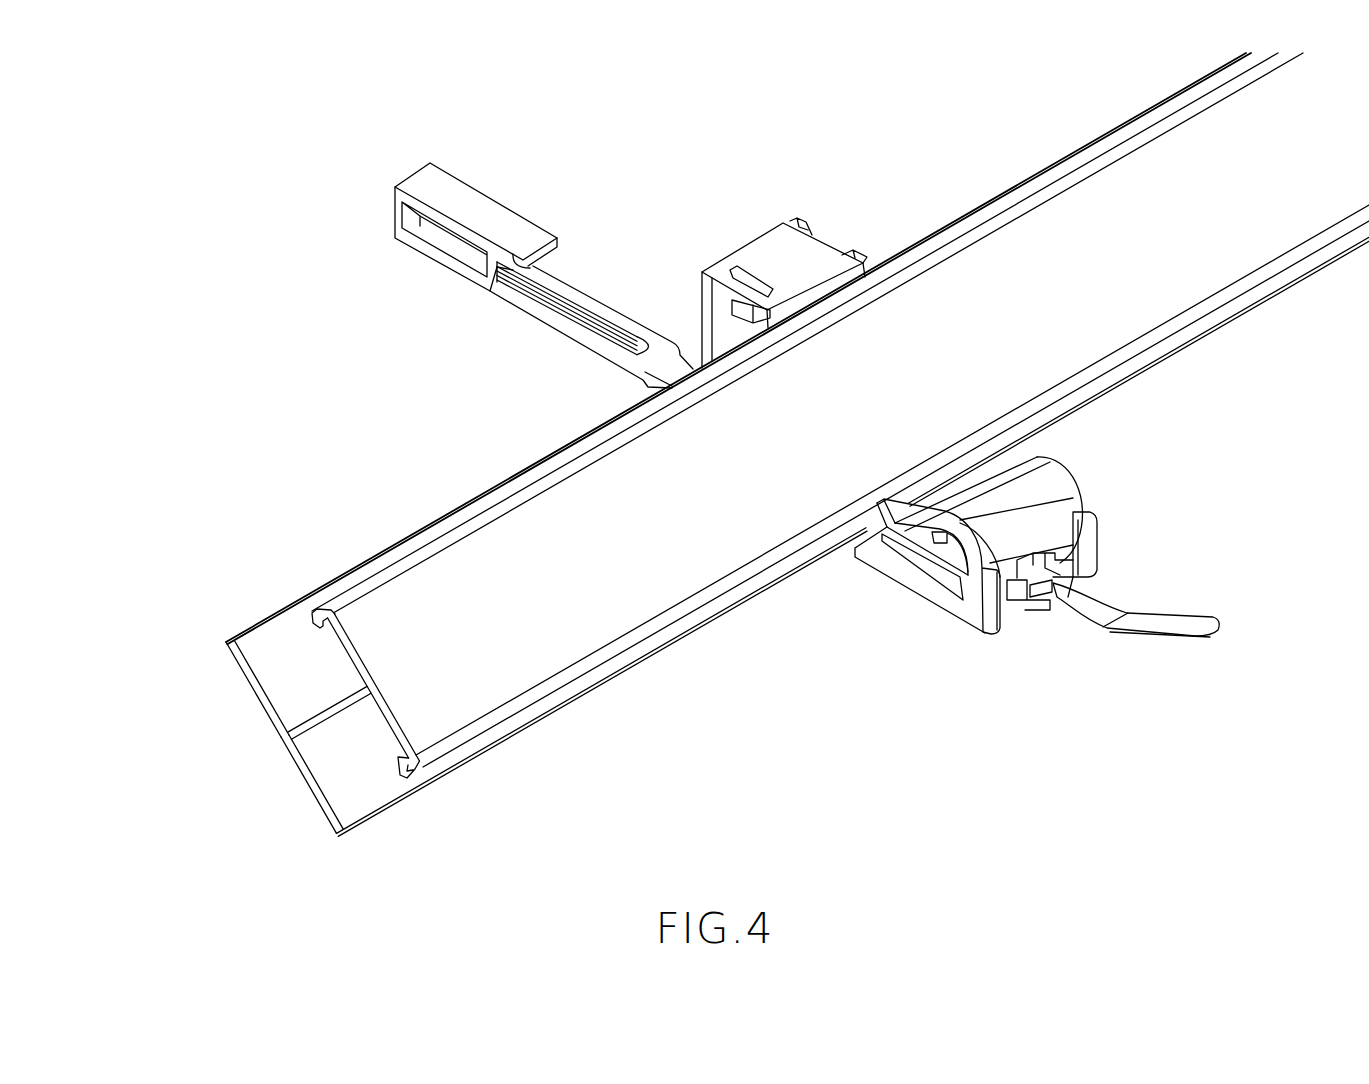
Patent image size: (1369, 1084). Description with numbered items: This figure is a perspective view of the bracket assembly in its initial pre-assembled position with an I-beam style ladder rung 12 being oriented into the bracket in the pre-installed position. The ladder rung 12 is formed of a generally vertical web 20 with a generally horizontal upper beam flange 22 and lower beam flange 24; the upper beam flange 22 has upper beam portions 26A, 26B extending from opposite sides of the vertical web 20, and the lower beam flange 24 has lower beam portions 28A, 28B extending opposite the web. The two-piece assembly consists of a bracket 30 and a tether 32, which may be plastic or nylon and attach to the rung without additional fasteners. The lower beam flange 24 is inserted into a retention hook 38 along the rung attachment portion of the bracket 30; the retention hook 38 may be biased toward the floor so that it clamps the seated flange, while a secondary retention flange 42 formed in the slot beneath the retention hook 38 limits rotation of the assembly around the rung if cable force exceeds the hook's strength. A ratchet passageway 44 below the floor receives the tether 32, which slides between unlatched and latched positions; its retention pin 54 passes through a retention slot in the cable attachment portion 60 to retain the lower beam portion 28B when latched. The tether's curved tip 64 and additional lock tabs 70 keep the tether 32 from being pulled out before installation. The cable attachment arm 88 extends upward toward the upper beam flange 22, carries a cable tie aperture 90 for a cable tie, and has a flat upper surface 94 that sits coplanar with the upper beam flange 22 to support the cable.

The ladder rung 12 is at (735, 474).
The vertical web 20 is at (325, 723).
The upper beam flange 22 is at (356, 650).
The lower beam flange 24 is at (222, 766).
The upper beam portion 26A is at (399, 762).
The upper beam portion 26B is at (330, 635).
The lower beam portion 28A is at (327, 827).
The lower beam portion 28B is at (232, 662).
The bracket 30 is at (778, 251).
The tether 32 is at (562, 292).
The retention hook 38 is at (1043, 559).
The secondary retention flange 42 is at (938, 540).
The ratchet passageway 44 is at (1057, 565).
The retention pin 54 is at (527, 232).
The cable attachment portion 60 is at (866, 258).
The curved tip 64 is at (1120, 610).
The additional lock tabs 70 is at (1043, 603).
The cable attachment arm 88 is at (697, 308).
The cable tie aperture 90 is at (705, 263).
The upper surface 94 is at (781, 243).